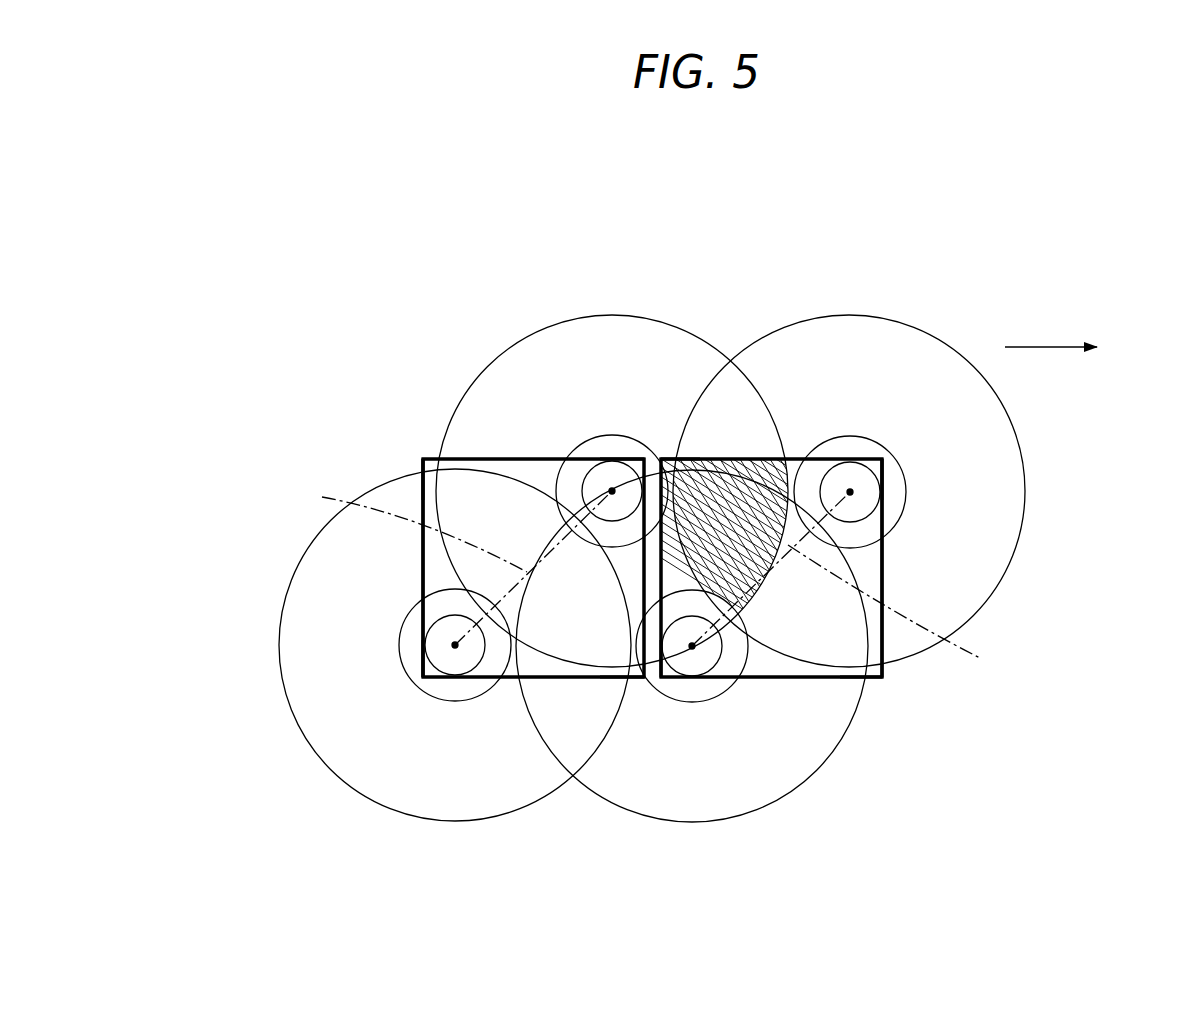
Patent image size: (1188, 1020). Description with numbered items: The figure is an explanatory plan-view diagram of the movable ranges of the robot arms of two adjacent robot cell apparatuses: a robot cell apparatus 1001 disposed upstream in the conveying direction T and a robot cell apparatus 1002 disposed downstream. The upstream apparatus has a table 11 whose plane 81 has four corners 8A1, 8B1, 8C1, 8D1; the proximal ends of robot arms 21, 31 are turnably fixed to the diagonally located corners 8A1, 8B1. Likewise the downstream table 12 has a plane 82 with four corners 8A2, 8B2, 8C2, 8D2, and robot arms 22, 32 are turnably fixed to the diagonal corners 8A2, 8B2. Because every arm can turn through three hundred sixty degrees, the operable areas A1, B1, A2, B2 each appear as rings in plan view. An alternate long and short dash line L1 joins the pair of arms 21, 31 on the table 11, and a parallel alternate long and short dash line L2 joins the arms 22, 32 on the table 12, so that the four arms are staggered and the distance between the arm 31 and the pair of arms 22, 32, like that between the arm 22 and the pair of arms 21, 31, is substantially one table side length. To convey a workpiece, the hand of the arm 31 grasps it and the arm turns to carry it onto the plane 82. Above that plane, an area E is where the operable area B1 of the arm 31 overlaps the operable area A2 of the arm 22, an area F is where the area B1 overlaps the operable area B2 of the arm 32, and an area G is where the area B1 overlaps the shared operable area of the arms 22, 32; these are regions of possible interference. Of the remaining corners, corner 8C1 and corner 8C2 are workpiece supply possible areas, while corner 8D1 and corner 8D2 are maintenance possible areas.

The robot cell apparatus 1001 is at (529, 310).
The robot cell apparatus 1002 is at (871, 300).
The table 11 is at (422, 465).
The table 12 is at (887, 673).
The robot arm 21 is at (485, 662).
The robot arm 22 is at (724, 652).
The robot arm 31 is at (563, 458).
The robot arm 32 is at (886, 535).
The plane 81 is at (428, 567).
The plane 82 is at (882, 560).
The corner 8A1 is at (422, 663).
The corner 8B1 is at (637, 457).
The corner 8C1 is at (430, 460).
The corner 8D1 is at (635, 672).
The corner 8A2 is at (668, 672).
The corner 8B2 is at (882, 463).
The corner 8C2 is at (672, 457).
The corner 8D2 is at (878, 672).
The operable area A1 is at (460, 795).
The operable area A2 is at (762, 768).
The operable area B1 is at (485, 400).
The operable area B2 is at (958, 600).
The alternate long and short dash line L1 is at (408, 526).
The alternate long and short dash line L2 is at (892, 620).
The area E is at (697, 457).
The area G is at (733, 457).
The area F is at (771, 457).
The conveying direction T is at (1047, 345).